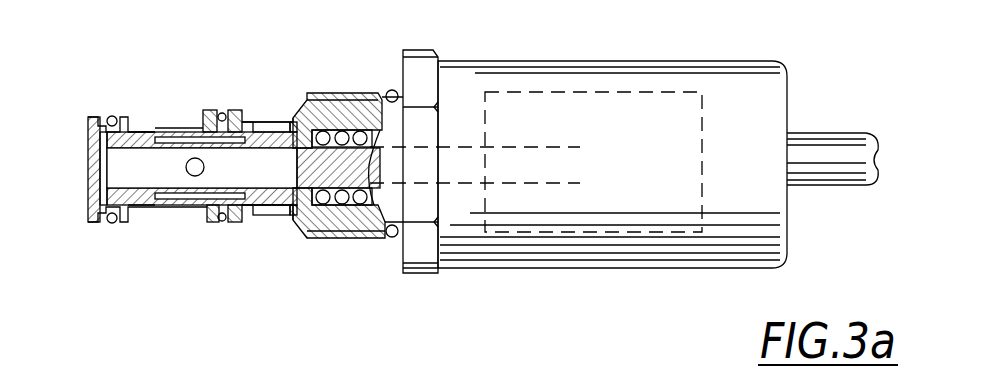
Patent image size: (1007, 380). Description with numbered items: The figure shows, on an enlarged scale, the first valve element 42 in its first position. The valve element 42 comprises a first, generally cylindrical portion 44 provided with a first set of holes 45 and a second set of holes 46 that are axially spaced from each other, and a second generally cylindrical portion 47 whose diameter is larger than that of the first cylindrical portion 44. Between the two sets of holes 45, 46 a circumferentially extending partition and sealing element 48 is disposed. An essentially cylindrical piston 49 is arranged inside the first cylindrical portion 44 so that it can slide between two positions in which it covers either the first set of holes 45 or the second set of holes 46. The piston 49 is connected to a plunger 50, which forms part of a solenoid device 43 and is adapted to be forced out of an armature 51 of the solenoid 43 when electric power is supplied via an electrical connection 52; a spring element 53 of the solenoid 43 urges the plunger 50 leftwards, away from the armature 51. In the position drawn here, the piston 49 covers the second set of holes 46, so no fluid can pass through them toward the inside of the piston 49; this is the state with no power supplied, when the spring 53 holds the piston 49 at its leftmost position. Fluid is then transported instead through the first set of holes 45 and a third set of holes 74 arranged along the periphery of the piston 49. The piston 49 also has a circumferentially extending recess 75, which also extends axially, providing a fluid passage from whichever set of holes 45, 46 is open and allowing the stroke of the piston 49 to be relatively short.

The first valve element 42 is at (402, 42).
The solenoid device 43 is at (570, 66).
The first generally cylindrical portion 44 is at (130, 127).
The first set of holes 45 is at (160, 128).
The second set of holes 46 is at (262, 121).
The second generally cylindrical portion 47 is at (350, 93).
The partition and sealing element 48 is at (213, 112).
The piston 49 is at (283, 213).
The plunger 50 is at (382, 230).
The armature 51 is at (645, 96).
The electrical connection 52 is at (830, 133).
The spring element 53 is at (317, 240).
The third set of holes 74 is at (187, 128).
The circumferentially extending recess 75 is at (232, 112).